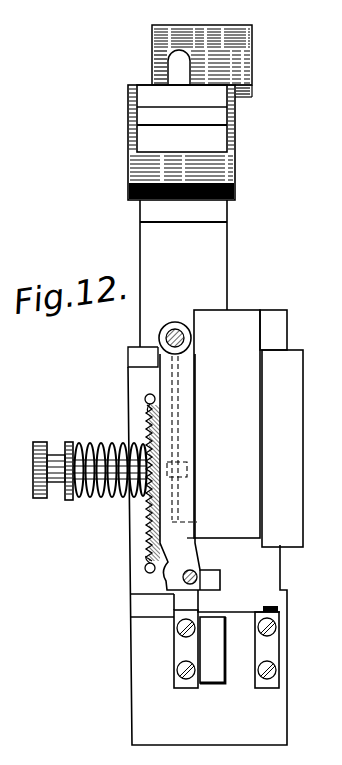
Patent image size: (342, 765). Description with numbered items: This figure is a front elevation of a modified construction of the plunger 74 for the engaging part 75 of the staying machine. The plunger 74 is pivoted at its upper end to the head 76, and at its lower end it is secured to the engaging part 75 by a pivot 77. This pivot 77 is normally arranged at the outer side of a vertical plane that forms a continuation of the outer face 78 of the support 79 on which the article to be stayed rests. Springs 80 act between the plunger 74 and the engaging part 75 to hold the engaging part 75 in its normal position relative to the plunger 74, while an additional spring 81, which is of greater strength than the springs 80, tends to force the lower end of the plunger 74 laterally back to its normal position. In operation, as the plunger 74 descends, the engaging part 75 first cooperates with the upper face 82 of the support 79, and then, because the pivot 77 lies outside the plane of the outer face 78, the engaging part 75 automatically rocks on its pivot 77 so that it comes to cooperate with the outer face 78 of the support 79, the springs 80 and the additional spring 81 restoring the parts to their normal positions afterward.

The plunger 74 is at (180, 507).
The engaging part 75 is at (198, 594).
The head 76 is at (223, 337).
The pivot 77 is at (210, 583).
The outer face 78 is at (198, 654).
The support 79 is at (213, 655).
The springs 80 is at (146, 557).
The additional spring 81 is at (102, 447).
The upper face 82 is at (213, 618).